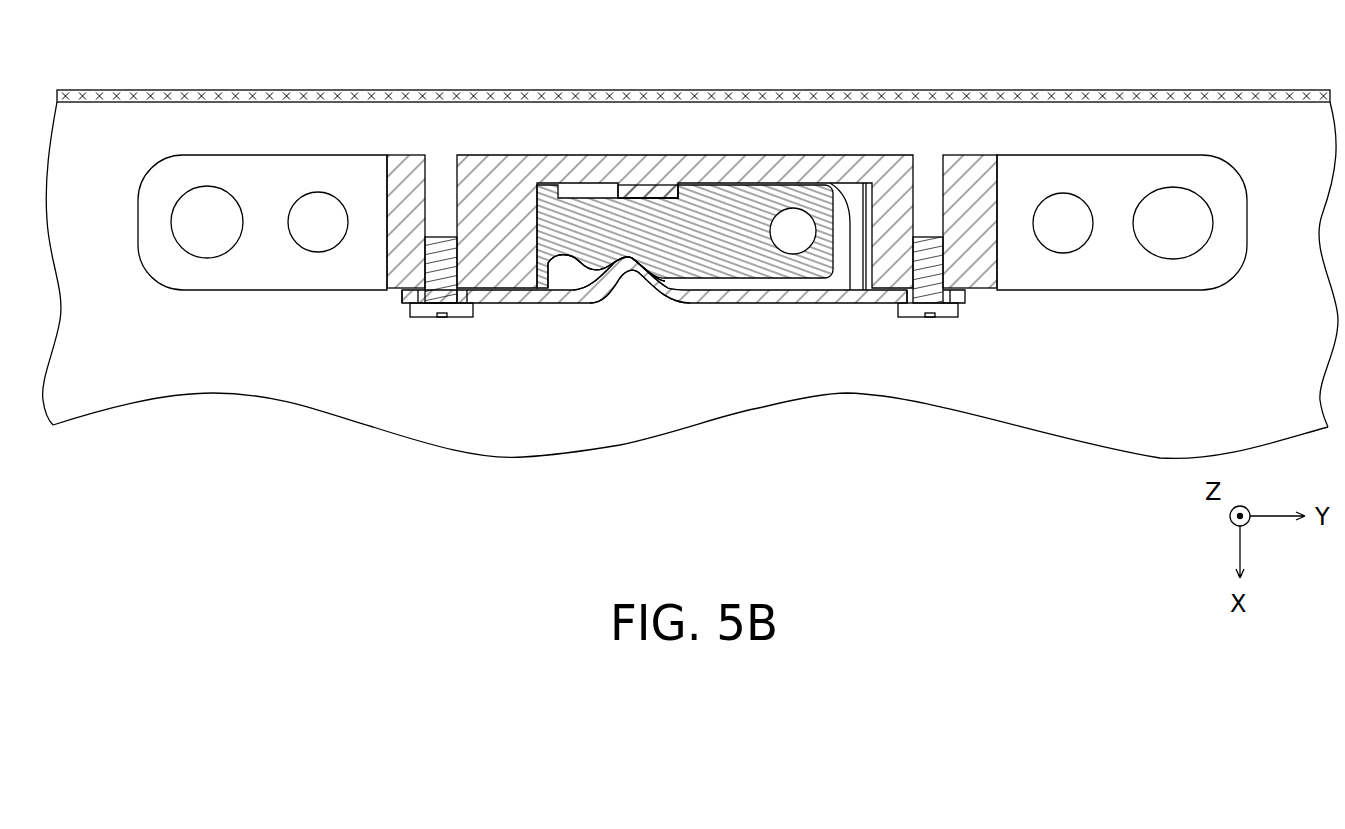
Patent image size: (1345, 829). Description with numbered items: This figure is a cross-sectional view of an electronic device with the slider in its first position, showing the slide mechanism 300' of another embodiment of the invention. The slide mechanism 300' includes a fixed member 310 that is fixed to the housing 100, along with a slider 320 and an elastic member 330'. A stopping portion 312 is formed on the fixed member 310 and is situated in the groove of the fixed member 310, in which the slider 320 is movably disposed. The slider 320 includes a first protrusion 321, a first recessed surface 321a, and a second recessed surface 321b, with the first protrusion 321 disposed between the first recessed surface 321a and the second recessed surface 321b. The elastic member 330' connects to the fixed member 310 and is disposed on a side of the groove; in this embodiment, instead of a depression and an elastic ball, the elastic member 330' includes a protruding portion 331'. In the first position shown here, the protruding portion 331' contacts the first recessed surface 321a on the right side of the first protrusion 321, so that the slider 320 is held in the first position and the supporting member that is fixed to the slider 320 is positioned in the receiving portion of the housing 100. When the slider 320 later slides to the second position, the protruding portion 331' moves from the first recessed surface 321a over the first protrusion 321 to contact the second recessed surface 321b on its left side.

The housing 100 is at (213, 120).
The slide mechanism 300' is at (692, 158).
The fixed member 310 is at (692, 157).
The stopping portion 312 is at (653, 193).
The slider 320 is at (664, 158).
The first protrusion 321 is at (602, 265).
The first recessed surface 321a is at (645, 262).
The second recessed surface 321b is at (562, 252).
The elastic member 330' is at (683, 379).
The protruding portion 331' is at (631, 389).